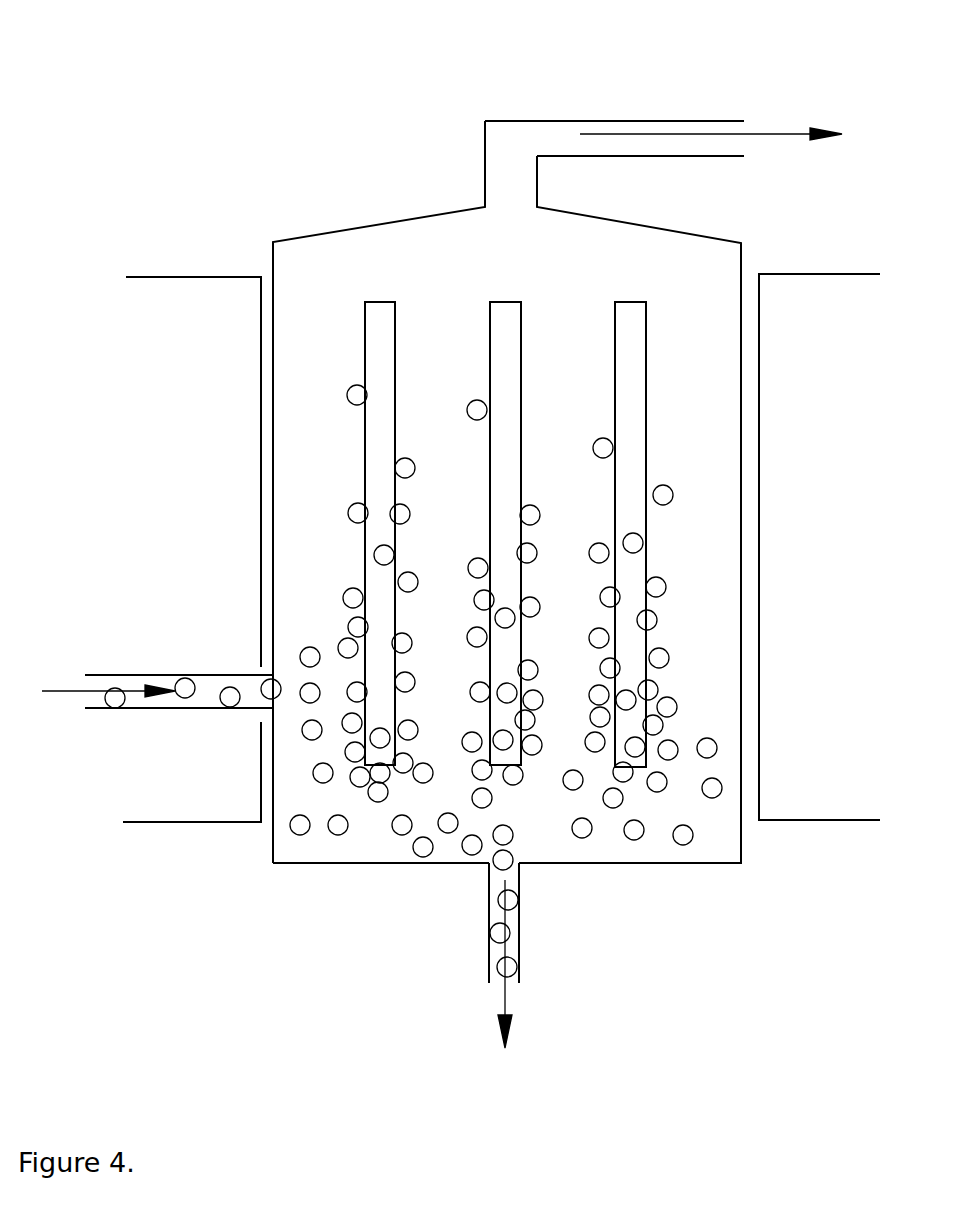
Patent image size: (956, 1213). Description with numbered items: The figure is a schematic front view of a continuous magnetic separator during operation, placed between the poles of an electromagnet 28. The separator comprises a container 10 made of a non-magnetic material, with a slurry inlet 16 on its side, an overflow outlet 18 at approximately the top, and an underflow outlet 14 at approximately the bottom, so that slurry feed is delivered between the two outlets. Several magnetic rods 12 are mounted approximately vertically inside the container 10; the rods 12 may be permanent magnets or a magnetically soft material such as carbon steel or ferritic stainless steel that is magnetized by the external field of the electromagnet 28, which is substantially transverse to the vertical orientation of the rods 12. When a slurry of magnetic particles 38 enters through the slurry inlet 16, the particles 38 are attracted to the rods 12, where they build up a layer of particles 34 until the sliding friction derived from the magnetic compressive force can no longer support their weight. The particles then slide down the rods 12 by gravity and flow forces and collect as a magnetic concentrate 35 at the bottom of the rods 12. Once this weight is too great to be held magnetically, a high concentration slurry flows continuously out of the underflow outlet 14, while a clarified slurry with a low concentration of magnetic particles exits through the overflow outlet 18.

The container 10 is at (340, 867).
The magnetic rod 12 is at (380, 338).
The underflow outlet 14 is at (533, 930).
The slurry inlet 16 is at (172, 717).
The overflow outlet 18 is at (650, 112).
The electromagnet 28 is at (198, 273).
The layer of particles 34 is at (670, 710).
The magnetic concentrate 35 is at (608, 830).
The magnetic particles 38 is at (668, 485).